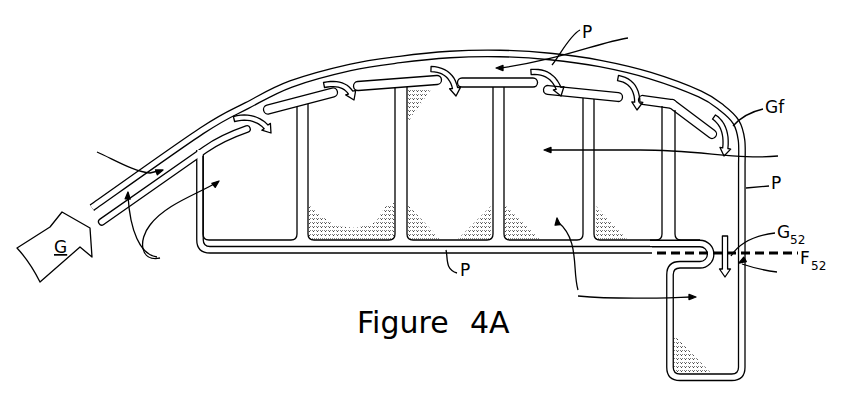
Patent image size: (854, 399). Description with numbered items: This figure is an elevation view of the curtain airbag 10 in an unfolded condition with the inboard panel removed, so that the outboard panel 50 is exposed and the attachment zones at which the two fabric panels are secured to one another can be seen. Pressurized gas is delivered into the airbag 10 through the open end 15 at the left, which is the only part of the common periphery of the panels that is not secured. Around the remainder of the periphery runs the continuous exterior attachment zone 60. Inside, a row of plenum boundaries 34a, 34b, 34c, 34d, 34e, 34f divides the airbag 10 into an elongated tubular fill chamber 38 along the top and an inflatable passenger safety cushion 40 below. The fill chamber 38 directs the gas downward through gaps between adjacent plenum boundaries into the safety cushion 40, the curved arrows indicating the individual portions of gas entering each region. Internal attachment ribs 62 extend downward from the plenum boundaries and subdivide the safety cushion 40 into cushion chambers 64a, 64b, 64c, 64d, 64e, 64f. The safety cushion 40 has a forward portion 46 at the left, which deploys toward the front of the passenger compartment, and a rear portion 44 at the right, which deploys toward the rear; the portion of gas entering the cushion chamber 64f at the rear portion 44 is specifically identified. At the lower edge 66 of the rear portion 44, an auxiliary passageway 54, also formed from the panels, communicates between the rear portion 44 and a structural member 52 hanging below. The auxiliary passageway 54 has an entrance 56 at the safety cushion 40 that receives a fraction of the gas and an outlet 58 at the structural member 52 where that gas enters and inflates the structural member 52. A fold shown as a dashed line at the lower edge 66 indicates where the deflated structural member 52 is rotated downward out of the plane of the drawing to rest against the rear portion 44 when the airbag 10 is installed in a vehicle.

The airbag 10 is at (342, 52).
The open end 15 is at (88, 204).
The plenum boundary 34a is at (233, 125).
The plenum boundary 34b is at (325, 95).
The plenum boundary 34c is at (397, 85).
The plenum boundary 34d is at (467, 80).
The plenum boundary 34e is at (640, 95).
The plenum boundary 34f is at (718, 112).
The tubular fill chamber 38 is at (363, 101).
The inflatable passenger safety cushion 40 is at (673, 155).
The rear portion 44 is at (692, 146).
The forward portion 46 is at (277, 212).
The outboard panel 50 is at (410, 243).
The structural member 52 is at (716, 316).
The auxiliary passageway 54 is at (770, 268).
The entrance 56 is at (718, 238).
The outlet 58 is at (722, 272).
The exterior attachment zone 60 is at (517, 62).
The internal attachment ribs 62 is at (666, 128).
The cushion chamber 64a is at (250, 173).
The cushion chamber 64b is at (351, 164).
The cushion chamber 64c is at (450, 163).
The cushion chamber 64d is at (543, 163).
The cushion chamber 64e is at (628, 169).
The cushion chamber 64f is at (697, 175).
The lower edge 66 is at (666, 267).